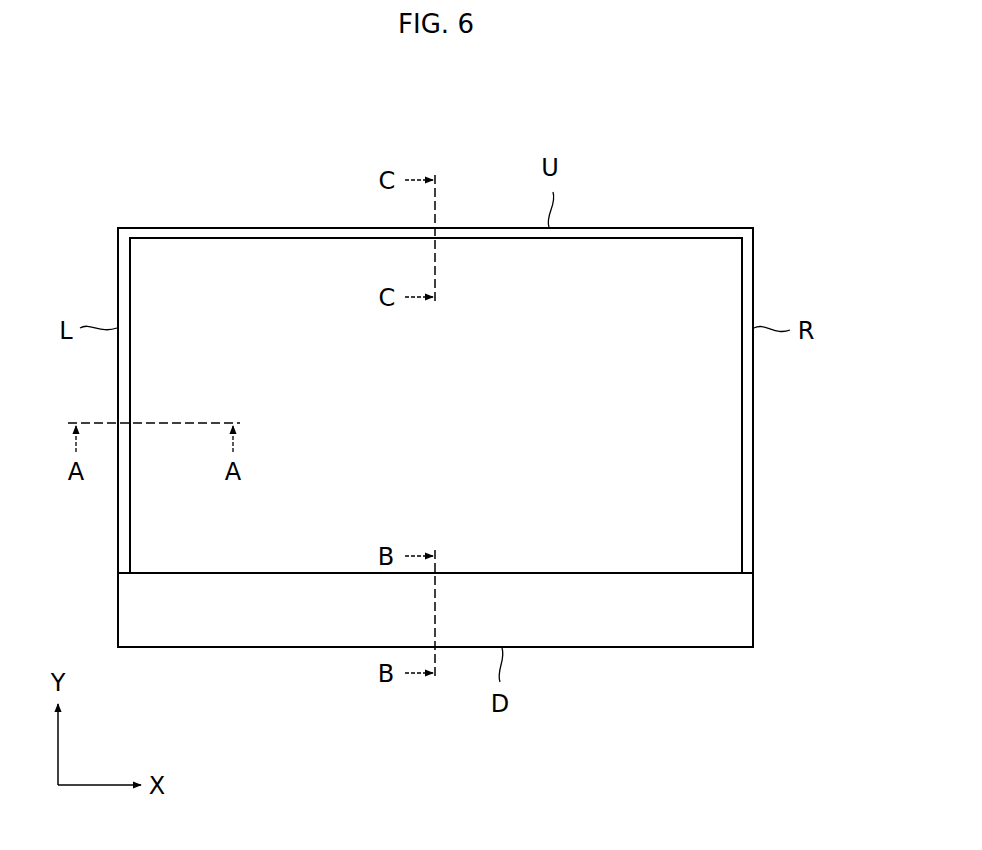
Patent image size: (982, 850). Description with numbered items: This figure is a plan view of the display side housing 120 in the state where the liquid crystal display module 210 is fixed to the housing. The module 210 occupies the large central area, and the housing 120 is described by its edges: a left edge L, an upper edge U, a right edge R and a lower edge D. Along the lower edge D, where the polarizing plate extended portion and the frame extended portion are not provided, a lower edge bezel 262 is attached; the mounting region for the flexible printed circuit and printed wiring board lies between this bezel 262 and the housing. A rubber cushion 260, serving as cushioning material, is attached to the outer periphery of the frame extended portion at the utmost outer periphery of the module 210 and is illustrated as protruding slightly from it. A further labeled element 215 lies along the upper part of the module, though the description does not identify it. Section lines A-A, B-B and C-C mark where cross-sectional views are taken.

The display side housing 120 is at (460, 81).
The liquid crystal display module 210 is at (676, 303).
The inner frame line 215 is at (646, 265).
The rubber cushion 260 is at (256, 230).
The lower edge bezel 262 is at (607, 628).